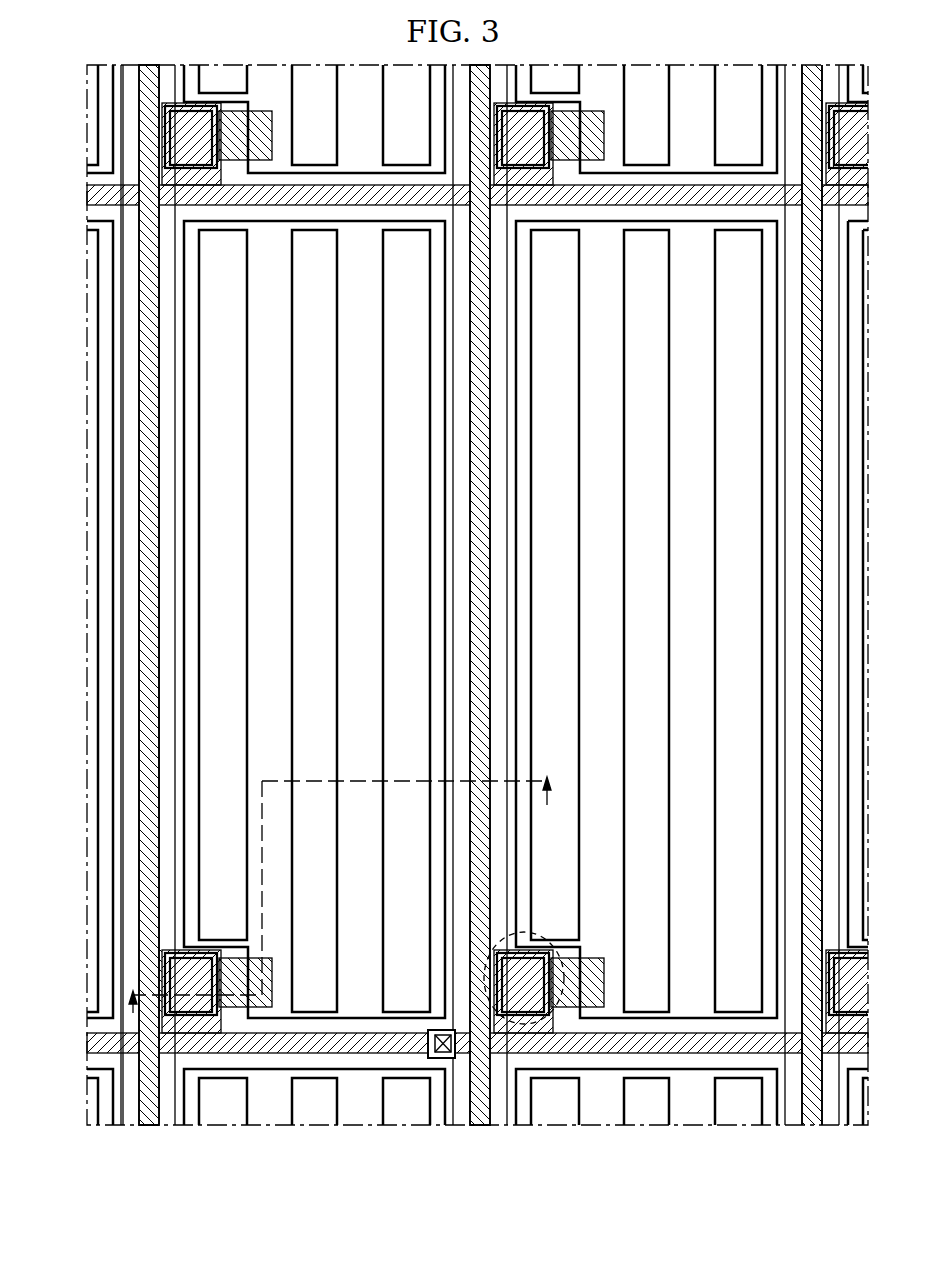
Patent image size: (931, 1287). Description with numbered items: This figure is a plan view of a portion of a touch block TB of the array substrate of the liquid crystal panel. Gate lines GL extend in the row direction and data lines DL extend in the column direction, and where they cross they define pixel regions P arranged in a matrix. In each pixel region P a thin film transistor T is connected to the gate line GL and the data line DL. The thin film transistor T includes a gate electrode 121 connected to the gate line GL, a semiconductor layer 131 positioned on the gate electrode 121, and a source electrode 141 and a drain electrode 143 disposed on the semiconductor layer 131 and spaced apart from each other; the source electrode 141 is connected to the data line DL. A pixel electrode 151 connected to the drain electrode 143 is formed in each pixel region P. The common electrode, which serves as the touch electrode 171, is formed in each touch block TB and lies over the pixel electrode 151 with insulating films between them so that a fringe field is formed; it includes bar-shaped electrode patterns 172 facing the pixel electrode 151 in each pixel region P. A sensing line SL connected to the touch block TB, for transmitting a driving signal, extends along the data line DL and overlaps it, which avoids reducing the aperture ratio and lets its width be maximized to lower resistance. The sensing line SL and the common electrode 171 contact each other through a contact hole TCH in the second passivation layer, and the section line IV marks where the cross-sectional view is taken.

The gate electrode 121 is at (160, 942).
The semiconductor layer 131 is at (193, 1030).
The source electrode 141 is at (157, 982).
The drain electrode 143 is at (235, 1010).
The pixel electrode 151 is at (181, 363).
The common electrode 171 is at (190, 322).
The electrode pattern 172 is at (382, 335).
The sensing line SL is at (123, 418).
The data line DL is at (153, 453).
The gate line GL is at (92, 1034).
The contact hole TCH is at (429, 1045).
The thin film transistor T is at (511, 1026).
The section line IV- IV is at (335, 906).
The pixel region P is at (158, 1182).
The touch block TB is at (86, 1222).